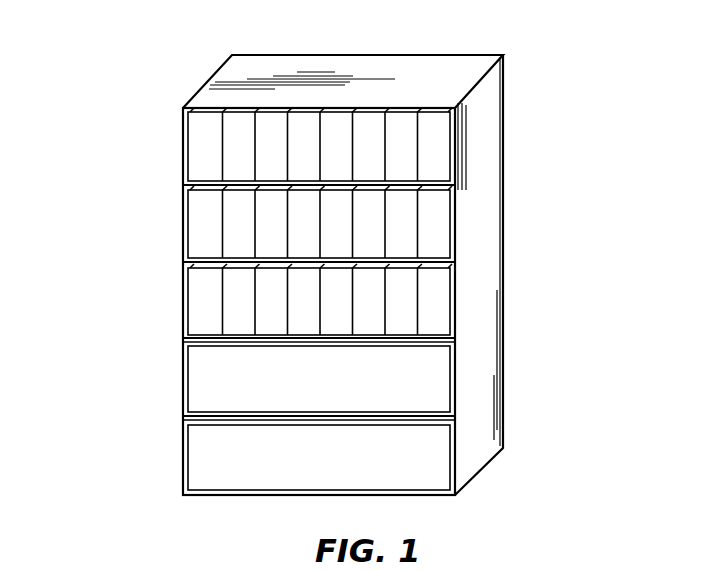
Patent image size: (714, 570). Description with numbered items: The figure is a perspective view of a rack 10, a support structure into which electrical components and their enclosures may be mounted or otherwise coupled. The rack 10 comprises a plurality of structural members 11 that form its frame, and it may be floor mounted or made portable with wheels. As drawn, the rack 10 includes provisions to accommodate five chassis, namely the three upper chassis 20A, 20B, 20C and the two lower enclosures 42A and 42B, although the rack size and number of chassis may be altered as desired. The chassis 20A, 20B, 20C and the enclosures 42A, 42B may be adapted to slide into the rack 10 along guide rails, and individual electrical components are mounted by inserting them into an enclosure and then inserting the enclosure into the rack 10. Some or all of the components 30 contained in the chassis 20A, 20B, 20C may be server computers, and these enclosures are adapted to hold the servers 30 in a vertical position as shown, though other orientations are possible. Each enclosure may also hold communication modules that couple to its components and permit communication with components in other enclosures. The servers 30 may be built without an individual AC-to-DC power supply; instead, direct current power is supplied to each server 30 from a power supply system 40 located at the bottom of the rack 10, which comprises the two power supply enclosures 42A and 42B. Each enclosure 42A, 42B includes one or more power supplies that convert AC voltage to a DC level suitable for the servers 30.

The rack 10 is at (486, 191).
The structural members 11 is at (201, 180).
The chassis 20A is at (182, 134).
The chassis 20B is at (182, 227).
The chassis 20C is at (182, 303).
The servers 30 is at (398, 130).
The power supply system 40 is at (168, 493).
The power supply enclosure 42A is at (422, 380).
The power supply enclosure 42B is at (428, 448).